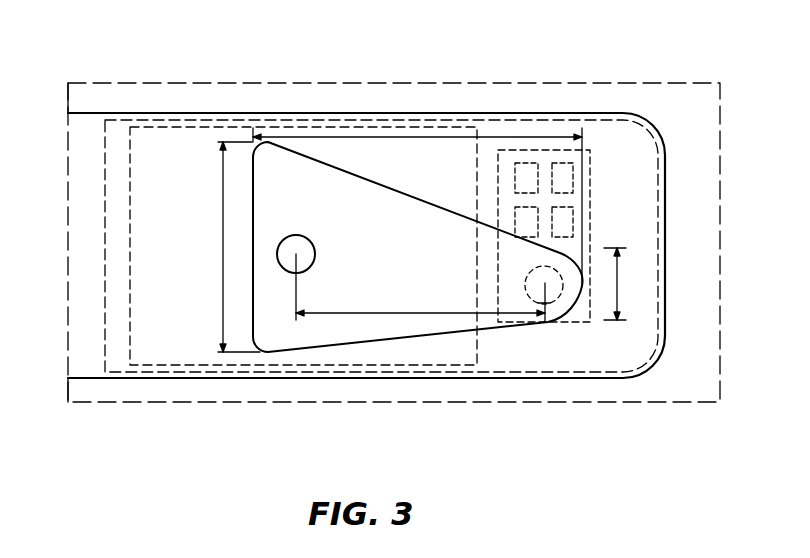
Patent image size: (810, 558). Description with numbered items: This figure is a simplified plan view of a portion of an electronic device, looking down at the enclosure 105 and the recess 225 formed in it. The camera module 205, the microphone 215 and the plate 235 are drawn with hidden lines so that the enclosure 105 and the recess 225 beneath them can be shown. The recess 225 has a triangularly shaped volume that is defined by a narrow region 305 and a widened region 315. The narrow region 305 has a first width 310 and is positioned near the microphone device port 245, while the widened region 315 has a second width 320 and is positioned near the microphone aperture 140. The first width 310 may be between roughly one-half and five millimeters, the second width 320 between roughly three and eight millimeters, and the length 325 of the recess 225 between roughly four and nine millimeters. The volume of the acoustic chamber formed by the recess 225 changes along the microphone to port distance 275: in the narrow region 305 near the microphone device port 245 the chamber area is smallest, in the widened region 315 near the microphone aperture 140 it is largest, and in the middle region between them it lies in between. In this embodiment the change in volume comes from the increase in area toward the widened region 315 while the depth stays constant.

The enclosure 105 is at (417, 100).
The camera module 205 is at (478, 160).
The microphone 215 is at (590, 186).
The recess 225 is at (415, 256).
The plate 235 is at (105, 258).
The microphone device port 245 is at (557, 275).
The microphone aperture 140 is at (312, 237).
The microphone to port distance 275 is at (398, 316).
The narrow region 305 is at (573, 288).
The first width 310 is at (618, 297).
The widened region 315 is at (280, 303).
The second width 320 is at (222, 236).
The length 325 is at (415, 137).